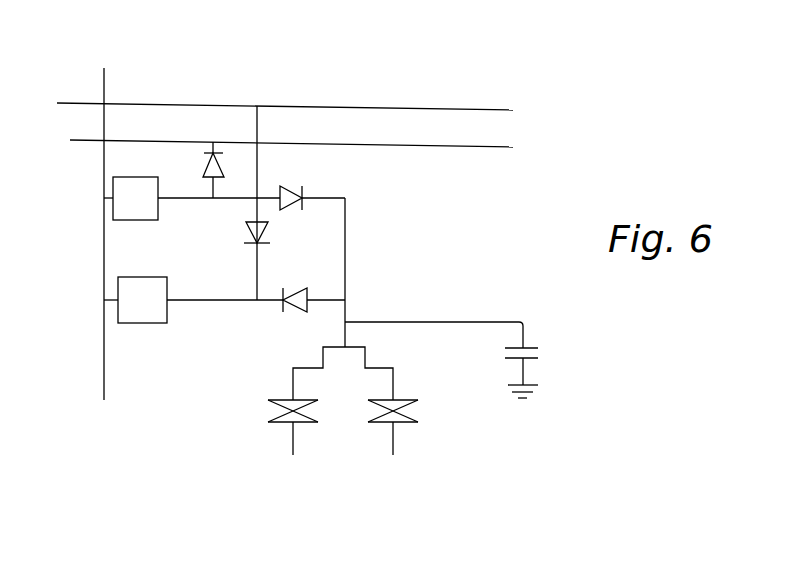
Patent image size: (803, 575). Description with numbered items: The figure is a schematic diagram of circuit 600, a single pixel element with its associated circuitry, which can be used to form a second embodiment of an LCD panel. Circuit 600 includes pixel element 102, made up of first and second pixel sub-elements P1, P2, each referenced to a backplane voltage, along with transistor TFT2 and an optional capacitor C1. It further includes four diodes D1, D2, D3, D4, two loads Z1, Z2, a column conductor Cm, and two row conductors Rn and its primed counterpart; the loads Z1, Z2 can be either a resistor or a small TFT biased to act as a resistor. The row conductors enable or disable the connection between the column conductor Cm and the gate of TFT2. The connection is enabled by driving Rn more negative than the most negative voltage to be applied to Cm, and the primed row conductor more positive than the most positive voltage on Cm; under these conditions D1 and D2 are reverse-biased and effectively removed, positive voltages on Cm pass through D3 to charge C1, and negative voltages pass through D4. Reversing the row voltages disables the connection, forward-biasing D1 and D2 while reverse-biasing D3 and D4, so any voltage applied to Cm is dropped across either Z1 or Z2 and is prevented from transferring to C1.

The circuit 600 is at (302, 252).
The pixel element 102 is at (252, 436).
The column conductor Cm is at (111, 221).
The row conductor Rn is at (270, 112).
The diode D1 is at (201, 170).
The diode D2 is at (242, 233).
The diode D3 is at (303, 184).
The diode D4 is at (305, 285).
The load Z1 is at (135, 198).
The load Z2 is at (142, 300).
The capacitor C1 is at (541, 370).
The transistor TFT2 is at (364, 364).
The first pixel sub-element P1 is at (309, 427).
The second pixel sub-element P2 is at (410, 427).